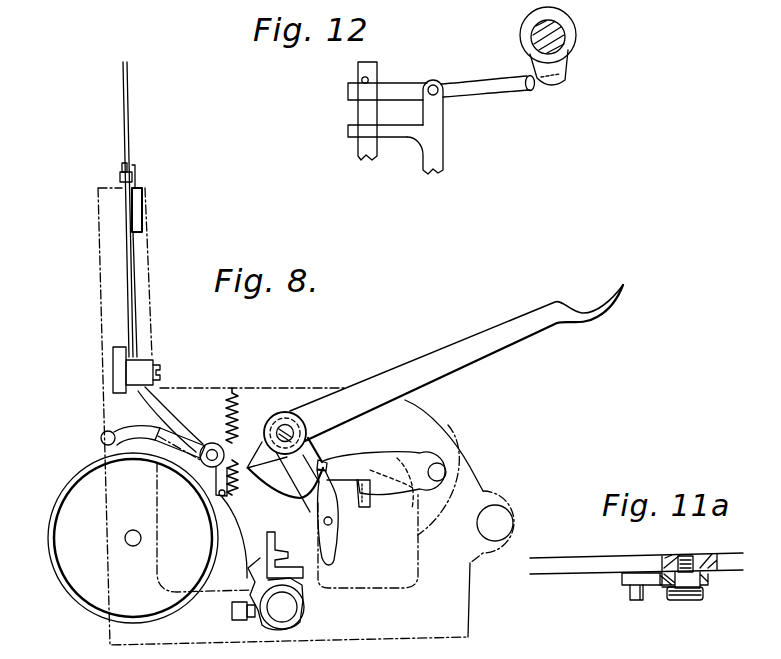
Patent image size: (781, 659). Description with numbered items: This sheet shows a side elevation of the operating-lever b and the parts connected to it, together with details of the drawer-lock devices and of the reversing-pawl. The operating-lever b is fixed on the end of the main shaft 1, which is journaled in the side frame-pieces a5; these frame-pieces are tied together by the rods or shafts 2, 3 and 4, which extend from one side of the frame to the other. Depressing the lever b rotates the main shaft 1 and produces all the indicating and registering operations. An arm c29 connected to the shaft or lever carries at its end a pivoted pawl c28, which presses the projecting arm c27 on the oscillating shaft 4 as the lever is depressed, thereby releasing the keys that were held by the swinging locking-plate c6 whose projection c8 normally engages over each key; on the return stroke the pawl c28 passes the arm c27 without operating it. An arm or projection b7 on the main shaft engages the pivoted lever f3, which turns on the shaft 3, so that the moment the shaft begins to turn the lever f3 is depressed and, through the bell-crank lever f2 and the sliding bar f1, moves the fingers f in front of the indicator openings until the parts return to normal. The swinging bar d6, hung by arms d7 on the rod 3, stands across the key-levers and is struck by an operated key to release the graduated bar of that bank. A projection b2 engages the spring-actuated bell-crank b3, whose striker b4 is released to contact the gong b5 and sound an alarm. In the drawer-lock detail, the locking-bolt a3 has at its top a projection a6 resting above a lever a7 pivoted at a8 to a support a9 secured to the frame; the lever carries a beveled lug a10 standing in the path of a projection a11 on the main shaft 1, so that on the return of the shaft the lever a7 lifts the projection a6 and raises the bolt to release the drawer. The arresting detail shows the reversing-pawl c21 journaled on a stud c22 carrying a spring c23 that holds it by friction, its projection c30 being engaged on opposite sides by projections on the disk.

In FIG. 12, the locking-bolt a3 is at (357, 110).
In FIG. 12, the projection a6 is at (370, 81).
In FIG. 12, the lever a7 is at (470, 92).
In FIG. 12, the pivot a8 is at (434, 84).
In FIG. 12, the support a9 is at (441, 133).
In FIG. 12, the beveled lug a10 is at (530, 91).
In FIG. 12, the projection a11 is at (566, 83).
In FIG. 12, the main shaft 1 is at (562, 38).
In FIG. 8, the finger f is at (133, 127).
In FIG. 8, the sliding bar f1 is at (137, 175).
In FIG. 8, the bell-crank lever f2 is at (133, 284).
In FIG. 8, the pivoted lever f3 is at (382, 458).
In FIG. 8, the operating-lever b is at (500, 327).
In FIG. 8, the projection b2 is at (255, 447).
In FIG. 8, the bell-crank b3 is at (193, 440).
In FIG. 8, the striker b4 is at (100, 440).
In FIG. 8, the gong b5 is at (63, 502).
In FIG. 8, the arm or projection b7 is at (330, 462).
In FIG. 8, the locking-plate c6 is at (278, 557).
In FIG. 8, the projection c8 is at (278, 545).
In FIG. 8, the projecting arm c27 is at (254, 586).
In FIG. 8, the pawl c28 is at (336, 550).
In FIG. 8, the arm c29 is at (310, 484).
In FIG. 8, the swinging bar d6 is at (364, 504).
In FIG. 8, the arms d7 is at (446, 496).
In FIG. 8, the rod or shaft 2 is at (495, 523).
In FIG. 8, the rod or shaft 3 is at (445, 472).
In FIG. 8, the rod or shaft 4 is at (286, 607).
In FIG. 11A, the side frame-piece a5 is at (564, 560).
In FIG. 11A, the reversing-pawl c21 is at (622, 585).
In FIG. 11A, the stud c22 is at (688, 557).
In FIG. 11A, the spring c23 is at (705, 592).
In FIG. 11A, the projection c30 is at (631, 601).